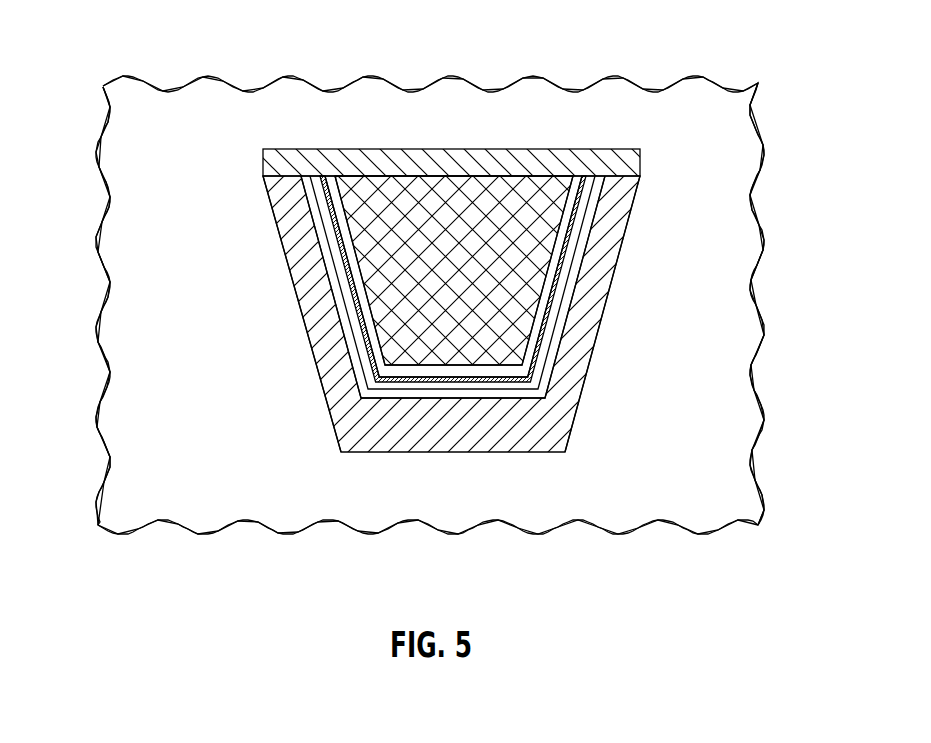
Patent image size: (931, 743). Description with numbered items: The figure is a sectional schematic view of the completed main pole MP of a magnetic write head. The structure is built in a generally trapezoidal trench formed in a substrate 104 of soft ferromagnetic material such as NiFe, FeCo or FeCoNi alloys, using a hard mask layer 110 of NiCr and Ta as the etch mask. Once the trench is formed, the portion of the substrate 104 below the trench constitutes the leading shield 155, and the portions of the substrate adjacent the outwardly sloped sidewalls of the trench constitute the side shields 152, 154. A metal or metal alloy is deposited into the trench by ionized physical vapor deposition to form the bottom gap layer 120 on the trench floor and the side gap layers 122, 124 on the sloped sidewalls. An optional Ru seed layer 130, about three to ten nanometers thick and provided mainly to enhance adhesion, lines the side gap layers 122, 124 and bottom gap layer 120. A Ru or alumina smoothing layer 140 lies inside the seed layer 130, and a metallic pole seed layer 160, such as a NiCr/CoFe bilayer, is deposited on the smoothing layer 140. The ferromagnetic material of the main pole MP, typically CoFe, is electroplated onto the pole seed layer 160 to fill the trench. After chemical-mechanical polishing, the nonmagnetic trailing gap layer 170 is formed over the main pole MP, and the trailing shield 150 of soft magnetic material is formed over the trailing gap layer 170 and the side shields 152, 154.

The substrate 104 is at (740, 487).
The hard mask layer 110 is at (122, 125).
The bottom gap layer 120 is at (533, 440).
The side gap layer 122 is at (617, 217).
The side gap layer 124 is at (280, 222).
The Ru seed layer 130 is at (332, 287).
The smoothing layer 140 is at (333, 242).
The trailing shield 150 is at (378, 103).
The side shield 152 is at (743, 229).
The side shield 154 is at (122, 229).
The leading shield 155 is at (370, 512).
The pole seed layer 160 is at (367, 345).
The trailing gap layer 170 is at (273, 165).
The main pole MP is at (504, 190).